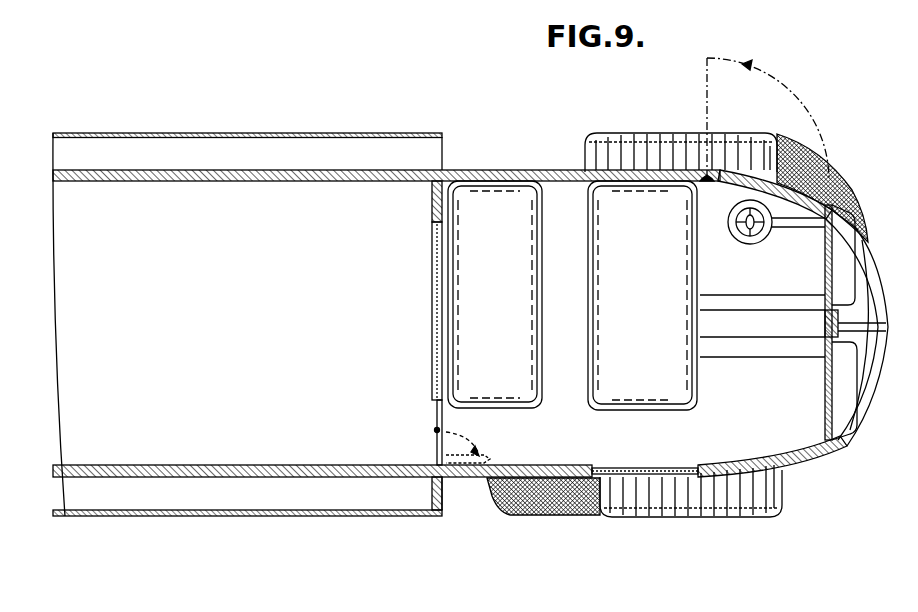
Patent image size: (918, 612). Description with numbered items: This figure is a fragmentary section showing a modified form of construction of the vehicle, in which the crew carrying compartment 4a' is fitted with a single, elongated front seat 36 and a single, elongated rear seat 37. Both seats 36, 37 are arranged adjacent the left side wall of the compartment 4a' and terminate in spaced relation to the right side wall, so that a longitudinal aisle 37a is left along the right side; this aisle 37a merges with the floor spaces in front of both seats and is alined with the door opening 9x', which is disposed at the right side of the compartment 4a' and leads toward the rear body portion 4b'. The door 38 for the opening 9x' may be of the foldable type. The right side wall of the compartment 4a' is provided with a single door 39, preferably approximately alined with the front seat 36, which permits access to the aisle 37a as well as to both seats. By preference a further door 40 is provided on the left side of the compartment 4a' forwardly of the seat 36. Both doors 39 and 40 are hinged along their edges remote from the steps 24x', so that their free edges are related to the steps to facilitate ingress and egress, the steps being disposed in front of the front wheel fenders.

The crew carrying compartment 4a' is at (793, 274).
The rear body section 4b' is at (386, 340).
The door opening 9x' is at (408, 345).
The wheel housing 24x' is at (683, 343).
The front seat 36 is at (683, 382).
The rear seat 37 is at (530, 368).
The longitudinal aisle 37a is at (514, 450).
The door 38 is at (445, 420).
The door 39 is at (664, 467).
The door 40 is at (738, 186).